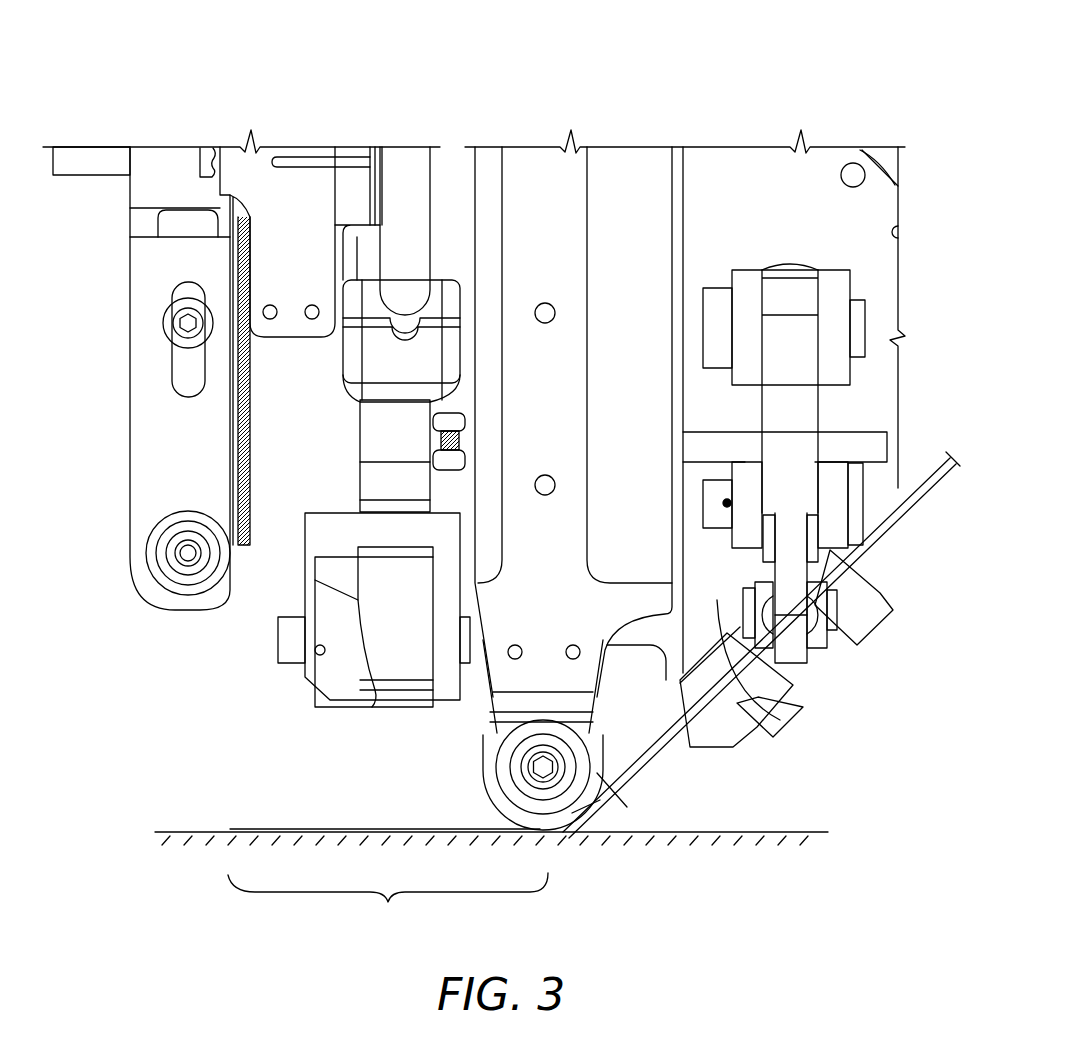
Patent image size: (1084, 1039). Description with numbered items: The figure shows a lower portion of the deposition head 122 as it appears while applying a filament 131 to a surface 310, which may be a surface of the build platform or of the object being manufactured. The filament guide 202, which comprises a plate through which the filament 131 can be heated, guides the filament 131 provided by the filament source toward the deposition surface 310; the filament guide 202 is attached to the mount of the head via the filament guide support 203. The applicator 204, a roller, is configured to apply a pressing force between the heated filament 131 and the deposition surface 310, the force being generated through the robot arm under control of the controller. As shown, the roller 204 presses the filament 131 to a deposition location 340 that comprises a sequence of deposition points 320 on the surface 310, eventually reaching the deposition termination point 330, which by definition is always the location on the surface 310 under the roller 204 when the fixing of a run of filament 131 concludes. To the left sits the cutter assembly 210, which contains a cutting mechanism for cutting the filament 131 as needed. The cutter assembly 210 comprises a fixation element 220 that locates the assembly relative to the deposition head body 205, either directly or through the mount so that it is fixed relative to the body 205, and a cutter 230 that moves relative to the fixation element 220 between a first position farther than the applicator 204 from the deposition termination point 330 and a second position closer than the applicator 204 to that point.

The deposition head 122 is at (783, 106).
The cutter assembly 210 is at (189, 701).
The fixation element 220 is at (190, 612).
The cutter 230 is at (348, 695).
The deposition head body 205 is at (503, 678).
The applicator 204 is at (490, 800).
The filament 131 is at (885, 525).
The filament guide support 203 is at (790, 712).
The filament guide 202 is at (705, 759).
The deposition surface 310 is at (785, 832).
The deposition points 320 is at (395, 836).
The deposition termination point 330 is at (563, 841).
The deposition location 340 is at (386, 904).